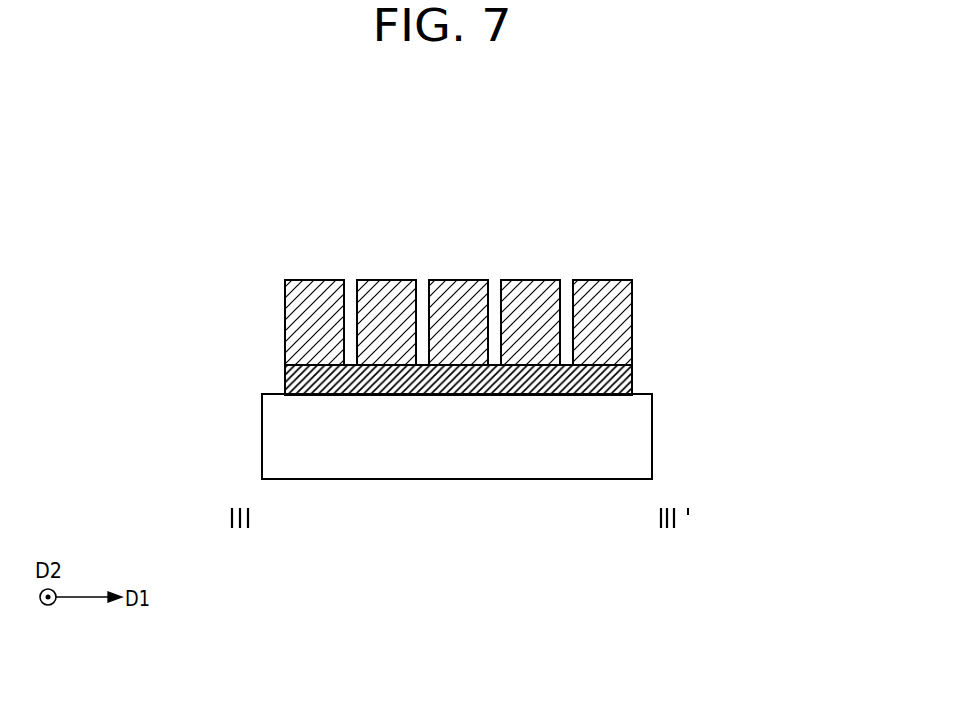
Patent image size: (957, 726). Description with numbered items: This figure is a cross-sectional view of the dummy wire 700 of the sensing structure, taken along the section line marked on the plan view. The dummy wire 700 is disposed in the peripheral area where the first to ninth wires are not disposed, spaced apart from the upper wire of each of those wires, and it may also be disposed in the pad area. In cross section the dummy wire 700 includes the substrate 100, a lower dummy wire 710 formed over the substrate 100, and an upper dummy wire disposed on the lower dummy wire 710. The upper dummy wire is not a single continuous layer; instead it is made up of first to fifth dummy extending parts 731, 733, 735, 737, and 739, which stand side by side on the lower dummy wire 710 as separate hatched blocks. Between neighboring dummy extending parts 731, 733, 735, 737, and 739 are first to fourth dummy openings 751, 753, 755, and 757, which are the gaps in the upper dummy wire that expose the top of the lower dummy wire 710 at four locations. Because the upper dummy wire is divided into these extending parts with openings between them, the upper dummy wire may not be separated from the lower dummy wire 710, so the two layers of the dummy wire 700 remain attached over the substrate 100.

The dummy wire 700 is at (522, 381).
The lower dummy wire 710 is at (632, 375).
The substrate 100 is at (653, 434).
The first dummy extending part 731 is at (317, 278).
The second dummy extending part 733 is at (389, 278).
The third dummy extending part 735 is at (461, 278).
The fourth dummy extending part 737 is at (533, 278).
The fifth dummy extending part 739 is at (605, 278).
The first dummy opening 751 is at (350, 352).
The second dummy opening 753 is at (422, 352).
The third dummy opening 755 is at (494, 352).
The fourth dummy opening 757 is at (566, 352).